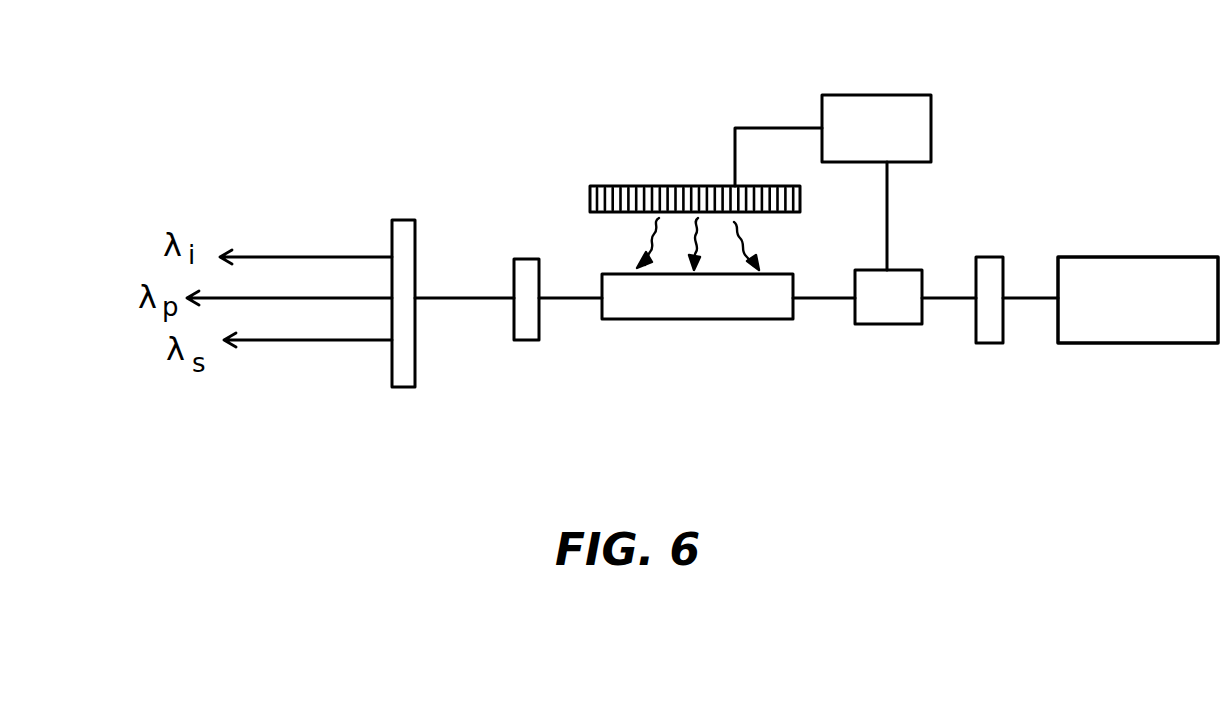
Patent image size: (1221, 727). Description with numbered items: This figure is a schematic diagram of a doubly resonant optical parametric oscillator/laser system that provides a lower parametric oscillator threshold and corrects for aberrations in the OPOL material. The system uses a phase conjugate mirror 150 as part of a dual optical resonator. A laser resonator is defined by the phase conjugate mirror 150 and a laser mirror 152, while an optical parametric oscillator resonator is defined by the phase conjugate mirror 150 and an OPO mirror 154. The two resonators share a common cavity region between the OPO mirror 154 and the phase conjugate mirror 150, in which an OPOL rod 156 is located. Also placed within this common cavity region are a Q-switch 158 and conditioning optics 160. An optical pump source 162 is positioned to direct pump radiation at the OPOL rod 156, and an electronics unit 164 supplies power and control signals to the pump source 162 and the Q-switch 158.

The phase conjugate mirror 150 is at (1133, 257).
The laser mirror 152 is at (404, 220).
The OPO mirror 154 is at (527, 259).
The OPOL rod 156 is at (711, 319).
The Q-switch 158 is at (881, 324).
The conditioning optics 160 is at (994, 257).
The optical pump source 162 is at (647, 186).
The electronics unit 164 is at (880, 95).